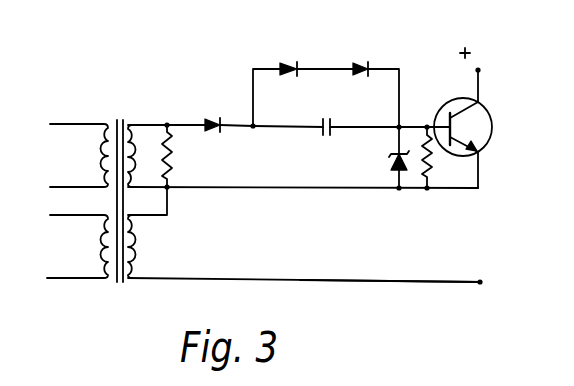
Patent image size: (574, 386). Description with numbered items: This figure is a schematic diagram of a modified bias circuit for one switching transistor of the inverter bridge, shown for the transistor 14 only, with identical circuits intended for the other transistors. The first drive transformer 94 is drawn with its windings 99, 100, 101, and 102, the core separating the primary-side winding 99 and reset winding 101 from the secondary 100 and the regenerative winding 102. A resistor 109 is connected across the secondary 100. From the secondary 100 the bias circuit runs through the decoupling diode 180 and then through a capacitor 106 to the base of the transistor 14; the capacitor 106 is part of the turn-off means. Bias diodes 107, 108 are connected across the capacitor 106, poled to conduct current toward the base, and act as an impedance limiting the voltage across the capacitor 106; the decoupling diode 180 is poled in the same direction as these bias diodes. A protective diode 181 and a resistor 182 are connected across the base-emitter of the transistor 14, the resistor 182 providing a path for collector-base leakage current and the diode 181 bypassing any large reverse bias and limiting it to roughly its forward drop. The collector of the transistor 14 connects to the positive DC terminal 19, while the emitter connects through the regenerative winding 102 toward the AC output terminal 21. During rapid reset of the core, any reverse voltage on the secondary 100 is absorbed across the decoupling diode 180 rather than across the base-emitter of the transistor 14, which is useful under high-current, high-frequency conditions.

The transistor 14 is at (481, 122).
The positive DC terminal 19 is at (480, 70).
The AC output terminal 21 is at (480, 282).
The first drive transformer 94 is at (120, 123).
The winding 99 is at (101, 148).
The secondary 100 is at (139, 125).
The reset winding 101 is at (101, 242).
The regenerative winding 102 is at (140, 245).
The capacitor 106 is at (331, 122).
The diode 107 is at (288, 65).
The diode 108 is at (361, 65).
The resistor 109 is at (172, 165).
The decoupling diode 180 is at (216, 120).
The protective diode 181 is at (390, 160).
The resistor 182 is at (430, 150).